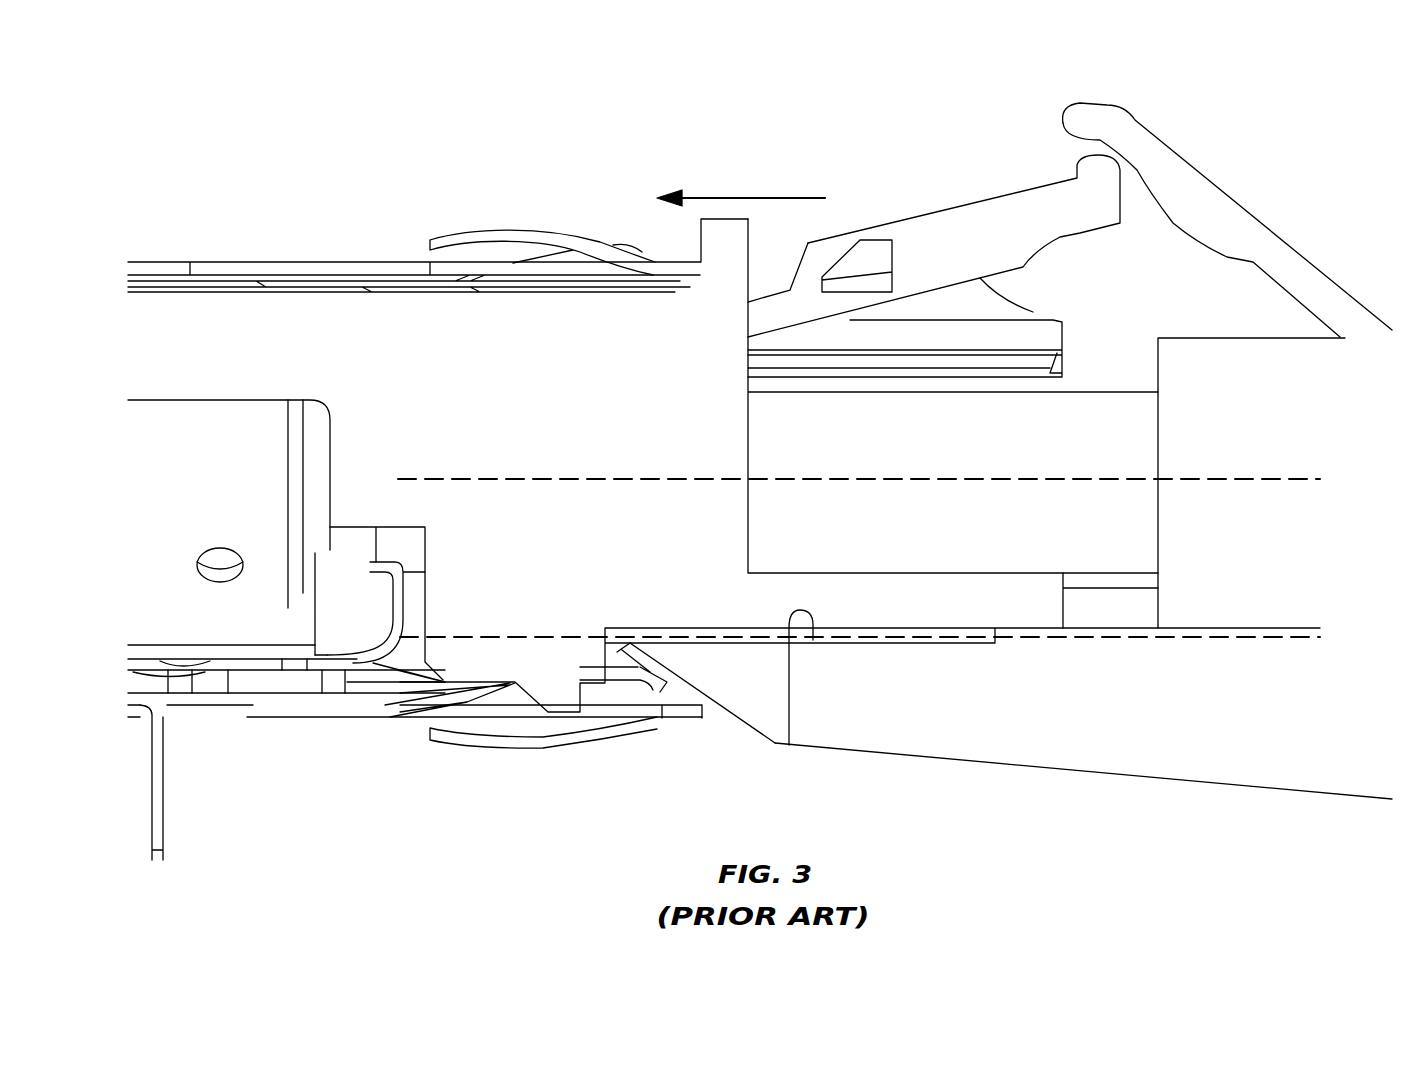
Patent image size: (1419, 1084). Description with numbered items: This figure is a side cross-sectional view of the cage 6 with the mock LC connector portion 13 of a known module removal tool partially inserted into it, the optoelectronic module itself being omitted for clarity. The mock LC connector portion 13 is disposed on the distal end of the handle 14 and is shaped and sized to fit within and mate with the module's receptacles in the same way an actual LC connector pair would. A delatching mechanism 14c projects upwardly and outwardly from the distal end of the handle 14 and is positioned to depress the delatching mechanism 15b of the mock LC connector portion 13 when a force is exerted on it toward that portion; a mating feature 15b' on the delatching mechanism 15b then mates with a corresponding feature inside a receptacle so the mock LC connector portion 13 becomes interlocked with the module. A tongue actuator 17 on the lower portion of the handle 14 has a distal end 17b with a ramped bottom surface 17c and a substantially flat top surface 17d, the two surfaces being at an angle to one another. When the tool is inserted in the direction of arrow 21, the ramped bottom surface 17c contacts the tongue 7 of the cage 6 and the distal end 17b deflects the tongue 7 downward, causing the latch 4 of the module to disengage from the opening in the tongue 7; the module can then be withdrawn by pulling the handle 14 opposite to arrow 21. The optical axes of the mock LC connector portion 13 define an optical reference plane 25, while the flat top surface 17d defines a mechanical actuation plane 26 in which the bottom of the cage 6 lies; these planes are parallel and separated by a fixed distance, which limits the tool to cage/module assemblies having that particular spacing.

The cage 6 is at (322, 258).
The arrow 21 is at (733, 197).
The delatching mechanism 15b is at (934, 215).
The mating feature 15b' is at (840, 203).
The delatching mechanism 14c is at (1222, 198).
The handle 14 is at (1270, 348).
The mock LC connector portion 13 is at (1087, 380).
The optical reference plane 25 is at (1200, 479).
The mechanical actuation plane 26 is at (1200, 636).
The tongue actuator 17 is at (1108, 742).
The ramped bottom surface 17c is at (732, 715).
The flat top surface 17d is at (789, 745).
The distal end 17b is at (633, 647).
The tongue 7 is at (500, 688).
The latch 4 is at (568, 697).